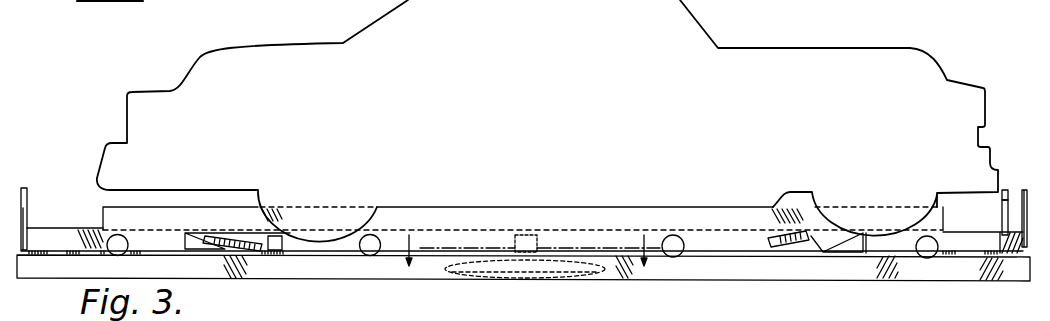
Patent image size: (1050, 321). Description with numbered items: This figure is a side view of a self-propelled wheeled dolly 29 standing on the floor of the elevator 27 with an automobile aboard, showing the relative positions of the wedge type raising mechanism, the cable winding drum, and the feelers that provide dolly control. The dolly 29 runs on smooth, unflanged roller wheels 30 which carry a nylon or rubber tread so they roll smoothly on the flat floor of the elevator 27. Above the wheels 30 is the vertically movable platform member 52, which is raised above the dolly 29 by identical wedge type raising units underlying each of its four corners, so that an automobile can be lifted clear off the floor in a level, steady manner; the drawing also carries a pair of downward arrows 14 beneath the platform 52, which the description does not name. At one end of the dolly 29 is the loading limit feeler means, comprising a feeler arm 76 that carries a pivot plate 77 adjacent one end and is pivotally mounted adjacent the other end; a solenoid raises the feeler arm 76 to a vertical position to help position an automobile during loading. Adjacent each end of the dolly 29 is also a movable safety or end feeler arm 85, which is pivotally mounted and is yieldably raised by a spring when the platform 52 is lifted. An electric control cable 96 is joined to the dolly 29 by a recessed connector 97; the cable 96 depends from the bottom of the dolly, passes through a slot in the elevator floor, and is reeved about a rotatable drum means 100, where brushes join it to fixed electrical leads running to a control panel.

The dolly 29 is at (52, 182).
The safety feeler arm 85 is at (20, 193).
The vertically movable platform member 52 is at (103, 213).
The roller wheel 30 is at (129, 244).
The load arrows 14 is at (528, 250).
The recessed connector 97 is at (513, 243).
The electric control cable 96 is at (533, 252).
The rotatable drum means 100 is at (461, 281).
The elevator 27 is at (278, 280).
The pivot plate 77 is at (1006, 190).
The feeler arm 76 is at (1002, 217).